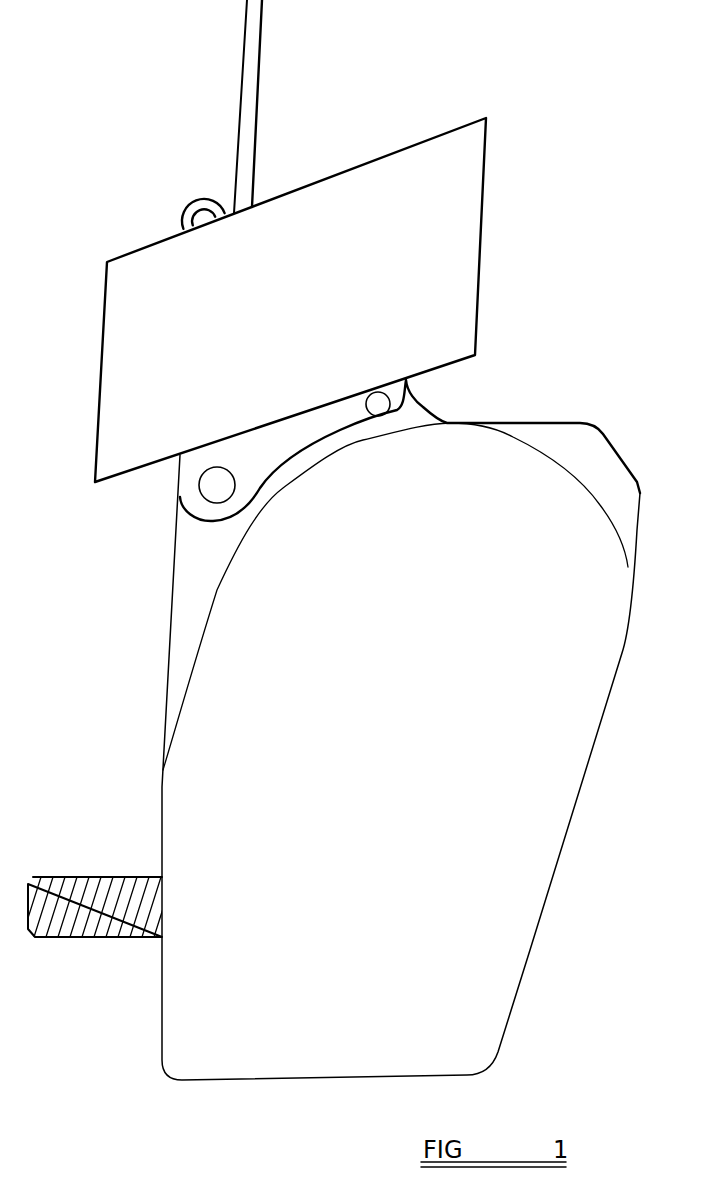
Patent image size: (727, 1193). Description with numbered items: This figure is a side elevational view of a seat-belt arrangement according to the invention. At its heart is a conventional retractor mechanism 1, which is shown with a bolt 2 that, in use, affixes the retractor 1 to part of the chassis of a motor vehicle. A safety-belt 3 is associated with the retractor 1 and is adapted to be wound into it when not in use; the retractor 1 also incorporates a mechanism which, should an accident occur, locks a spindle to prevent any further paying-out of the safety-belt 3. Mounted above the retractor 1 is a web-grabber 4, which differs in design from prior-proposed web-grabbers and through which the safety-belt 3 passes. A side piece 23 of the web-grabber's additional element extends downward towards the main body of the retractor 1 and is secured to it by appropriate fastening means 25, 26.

The retractor mechanism 1 is at (490, 843).
The bolt 2 is at (87, 930).
The safety-belt 3 is at (250, 95).
The web-grabber 4 is at (545, 202).
The side piece 23 is at (257, 457).
The fastening means 25 is at (222, 486).
The fastening means 26 is at (385, 409).